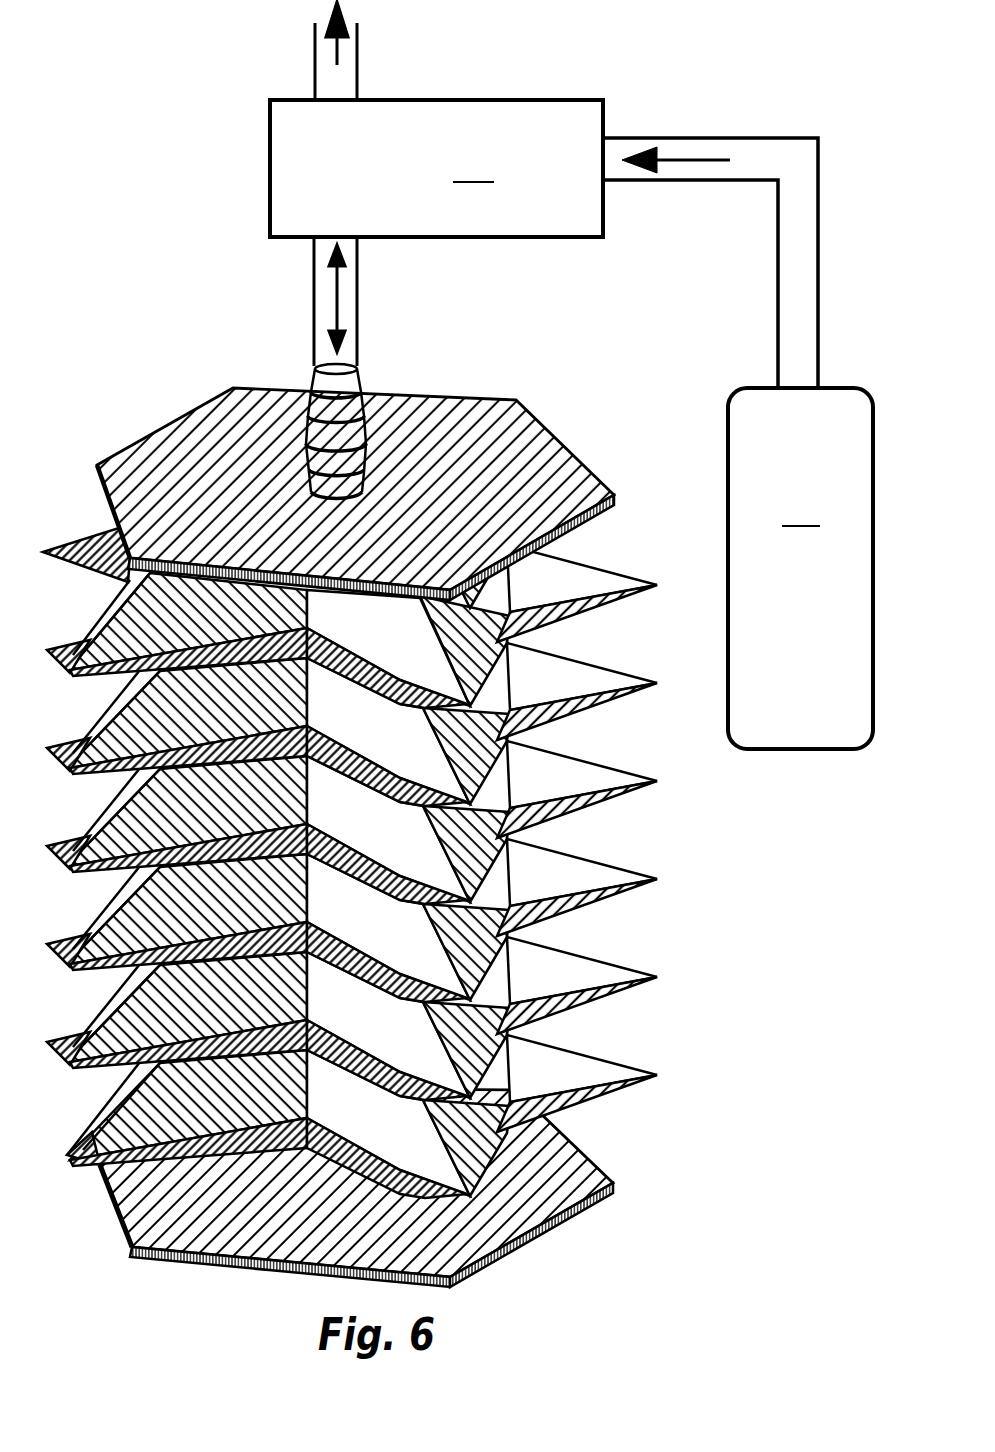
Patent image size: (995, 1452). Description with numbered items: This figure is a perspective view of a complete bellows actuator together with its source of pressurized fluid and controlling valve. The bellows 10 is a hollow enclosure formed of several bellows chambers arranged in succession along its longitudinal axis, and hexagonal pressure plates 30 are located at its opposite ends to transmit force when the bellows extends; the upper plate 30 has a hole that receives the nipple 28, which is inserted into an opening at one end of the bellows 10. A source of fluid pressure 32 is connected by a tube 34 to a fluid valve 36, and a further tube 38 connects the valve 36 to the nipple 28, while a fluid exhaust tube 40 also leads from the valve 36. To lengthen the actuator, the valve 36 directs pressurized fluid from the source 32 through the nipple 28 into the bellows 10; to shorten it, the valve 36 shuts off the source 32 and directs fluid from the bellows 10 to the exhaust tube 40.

The bellows 10 is at (592, 926).
The nipple 28 is at (302, 403).
The pressure plate 30 is at (577, 1163).
The source of fluid pressure 32 is at (774, 434).
The tube 34 is at (780, 262).
The fluid valve 36 is at (487, 118).
The tube 38 is at (346, 313).
The fluid exhaust tube 40 is at (340, 85).